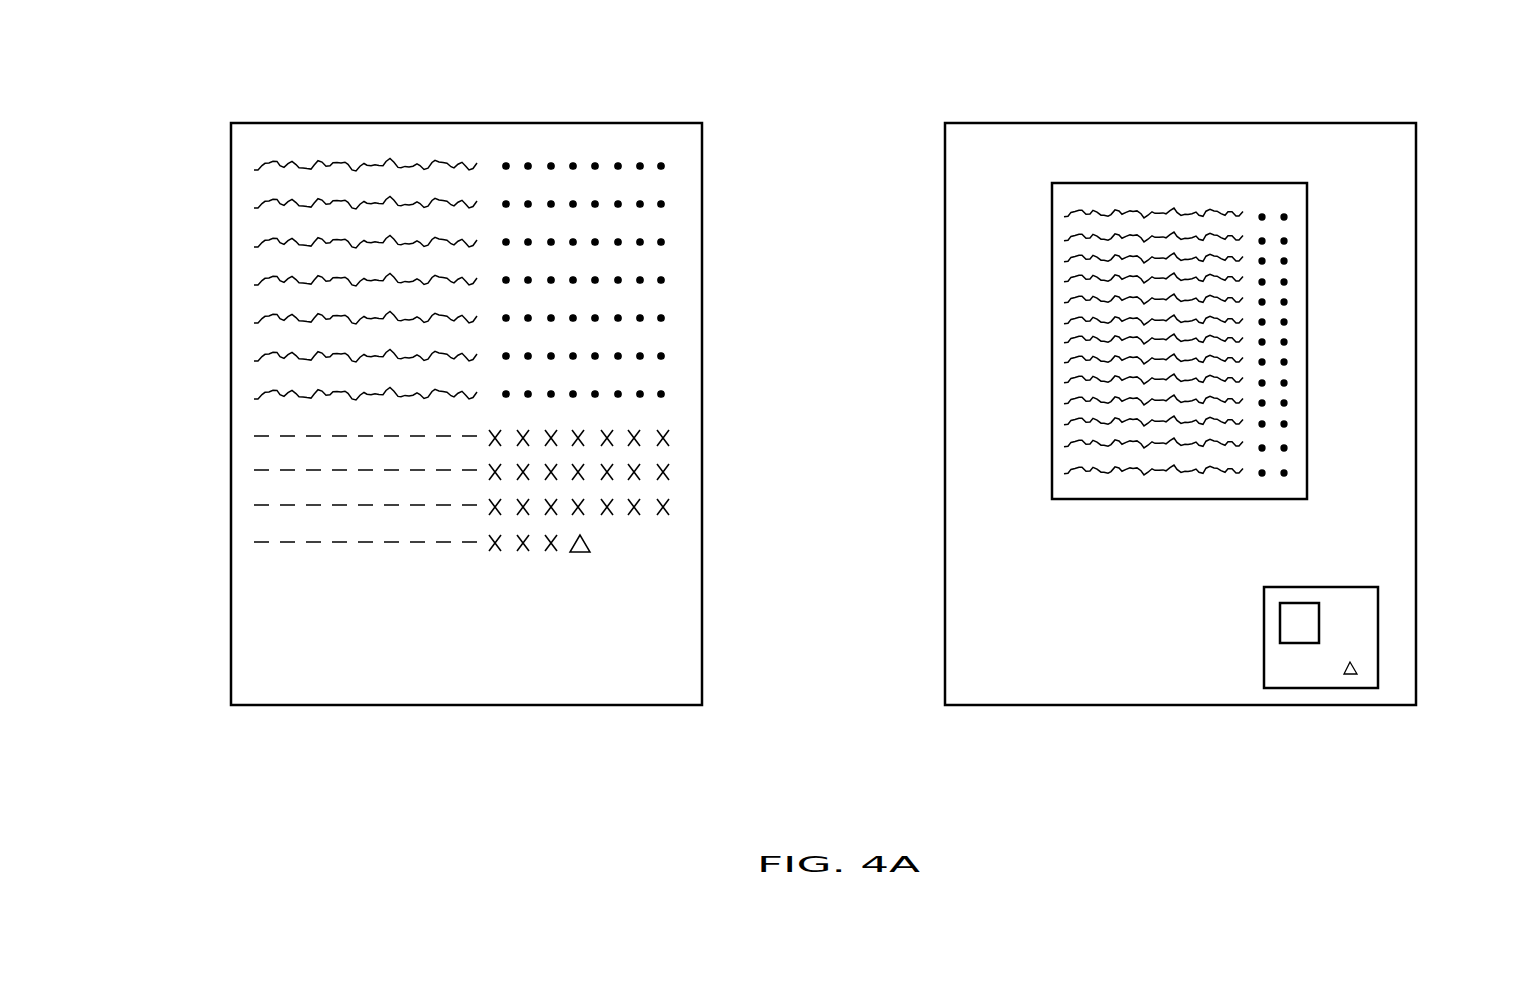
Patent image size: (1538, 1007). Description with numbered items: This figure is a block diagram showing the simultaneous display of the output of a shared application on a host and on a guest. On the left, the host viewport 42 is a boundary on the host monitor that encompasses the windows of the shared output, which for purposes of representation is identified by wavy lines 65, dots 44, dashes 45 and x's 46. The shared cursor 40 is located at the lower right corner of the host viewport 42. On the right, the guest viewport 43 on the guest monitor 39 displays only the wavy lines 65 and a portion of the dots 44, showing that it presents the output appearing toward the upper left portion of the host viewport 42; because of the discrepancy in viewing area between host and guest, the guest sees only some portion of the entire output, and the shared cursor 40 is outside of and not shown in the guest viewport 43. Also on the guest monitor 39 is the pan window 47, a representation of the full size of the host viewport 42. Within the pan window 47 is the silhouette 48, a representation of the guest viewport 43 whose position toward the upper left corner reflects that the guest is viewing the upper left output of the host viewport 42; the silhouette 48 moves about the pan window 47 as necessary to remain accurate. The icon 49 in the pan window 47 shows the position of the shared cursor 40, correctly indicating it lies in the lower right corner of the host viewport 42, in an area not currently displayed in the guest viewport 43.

The guest monitor 39 is at (968, 124).
The shared cursor 40 is at (592, 544).
The host viewport 42 is at (541, 123).
The guest viewport 43 is at (1262, 183).
The dots 44 is at (640, 164).
The dashes 45 is at (260, 436).
The x's 46 is at (667, 442).
The pan window 47 is at (1379, 642).
The silhouette 48 is at (1285, 619).
The icon 49 is at (1353, 678).
The wavy lines 65 is at (303, 168).